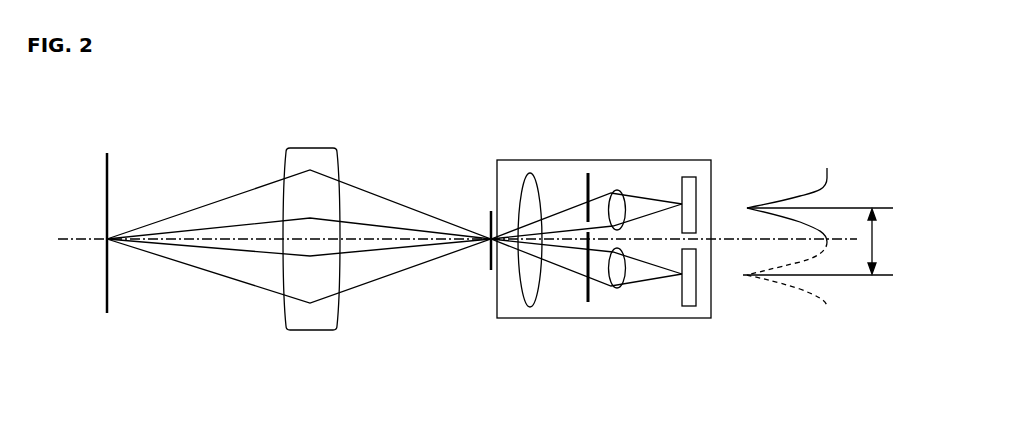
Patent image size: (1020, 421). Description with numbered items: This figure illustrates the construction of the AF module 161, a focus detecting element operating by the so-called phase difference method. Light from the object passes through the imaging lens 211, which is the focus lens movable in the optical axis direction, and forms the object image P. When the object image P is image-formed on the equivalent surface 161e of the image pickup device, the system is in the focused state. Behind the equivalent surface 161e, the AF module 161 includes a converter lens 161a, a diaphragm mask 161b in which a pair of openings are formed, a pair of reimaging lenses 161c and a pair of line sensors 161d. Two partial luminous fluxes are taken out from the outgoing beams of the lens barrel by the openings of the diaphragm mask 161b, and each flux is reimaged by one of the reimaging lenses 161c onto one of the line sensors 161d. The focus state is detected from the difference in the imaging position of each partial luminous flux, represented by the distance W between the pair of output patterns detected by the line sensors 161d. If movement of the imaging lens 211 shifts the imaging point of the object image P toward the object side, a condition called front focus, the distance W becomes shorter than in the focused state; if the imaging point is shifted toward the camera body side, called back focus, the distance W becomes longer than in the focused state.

The object image P is at (107, 177).
The imaging lens 211 is at (305, 153).
The AF module 161 is at (750, 129).
The converter lens 161a is at (528, 185).
The diaphragm mask 161b is at (588, 200).
The reimaging lenses 161c is at (613, 207).
The line sensors 161d is at (690, 195).
The equivalent surface 161e is at (490, 210).
The distance between output patterns W is at (818, 241).